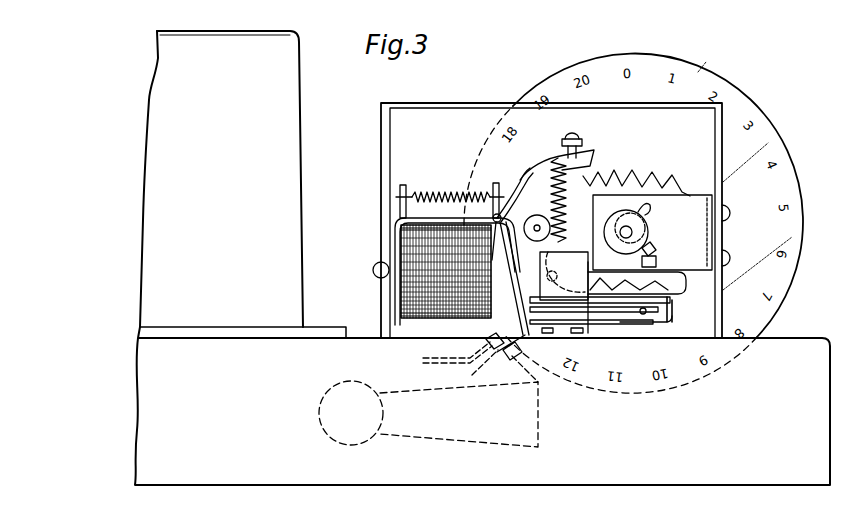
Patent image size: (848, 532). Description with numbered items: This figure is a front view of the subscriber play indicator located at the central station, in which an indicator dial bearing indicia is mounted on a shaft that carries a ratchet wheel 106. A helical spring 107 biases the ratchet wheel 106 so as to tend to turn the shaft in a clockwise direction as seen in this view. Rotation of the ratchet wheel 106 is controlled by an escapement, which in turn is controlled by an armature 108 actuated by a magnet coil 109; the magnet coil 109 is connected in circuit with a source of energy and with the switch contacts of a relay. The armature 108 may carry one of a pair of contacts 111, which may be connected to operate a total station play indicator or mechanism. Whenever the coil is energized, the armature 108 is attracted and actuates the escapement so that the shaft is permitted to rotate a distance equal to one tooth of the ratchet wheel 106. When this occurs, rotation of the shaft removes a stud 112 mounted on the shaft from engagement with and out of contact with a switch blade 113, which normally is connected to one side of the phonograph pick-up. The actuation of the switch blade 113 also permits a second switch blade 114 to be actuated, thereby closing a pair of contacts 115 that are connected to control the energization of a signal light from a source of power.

The ratchet wheel 106 is at (650, 181).
The helical spring 107 is at (586, 166).
The armature 108 is at (478, 188).
The magnet coil 109 is at (412, 322).
The contacts 111 is at (480, 359).
The stud 112 is at (652, 248).
The switch blade 113 is at (700, 290).
The switch blade 114 is at (680, 320).
The contacts 115 is at (643, 315).